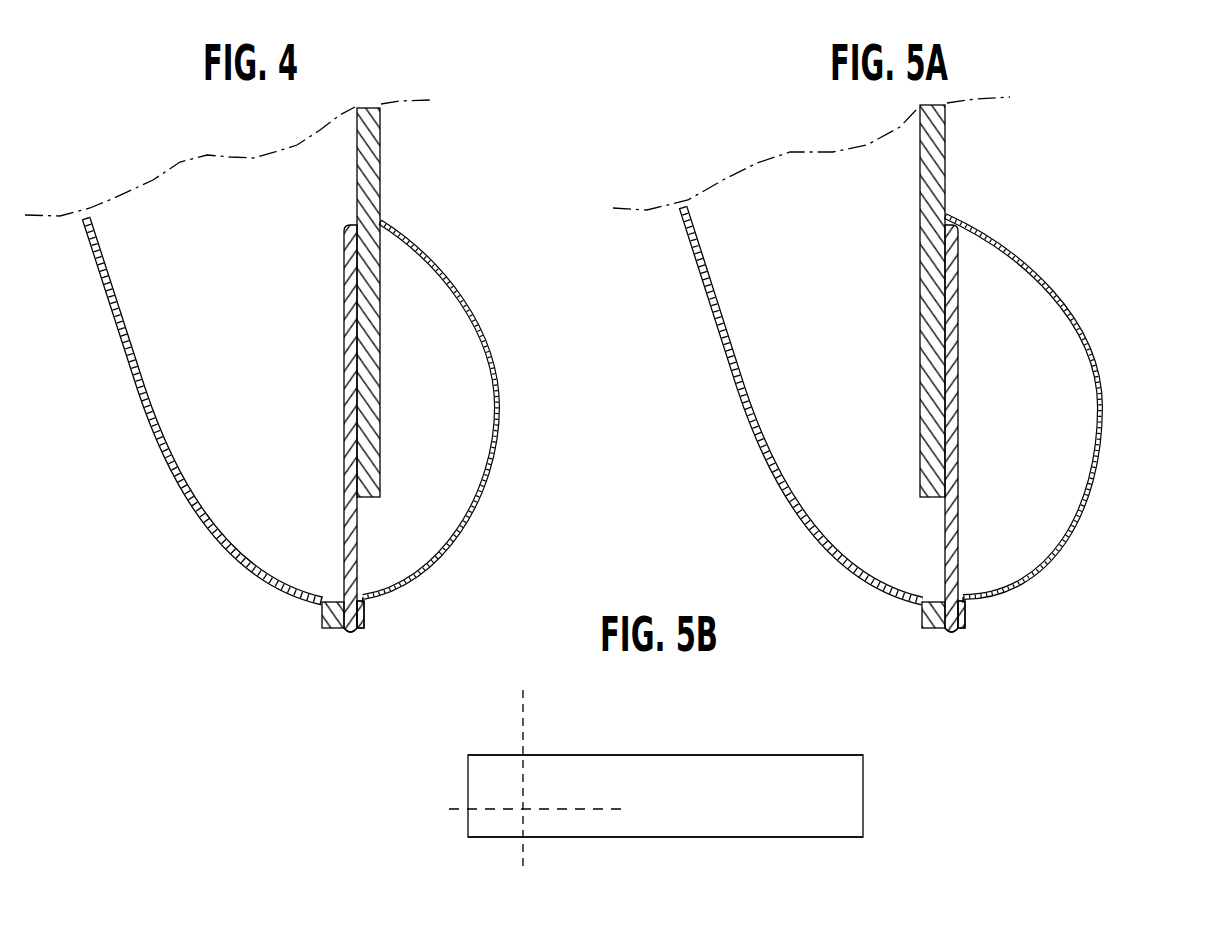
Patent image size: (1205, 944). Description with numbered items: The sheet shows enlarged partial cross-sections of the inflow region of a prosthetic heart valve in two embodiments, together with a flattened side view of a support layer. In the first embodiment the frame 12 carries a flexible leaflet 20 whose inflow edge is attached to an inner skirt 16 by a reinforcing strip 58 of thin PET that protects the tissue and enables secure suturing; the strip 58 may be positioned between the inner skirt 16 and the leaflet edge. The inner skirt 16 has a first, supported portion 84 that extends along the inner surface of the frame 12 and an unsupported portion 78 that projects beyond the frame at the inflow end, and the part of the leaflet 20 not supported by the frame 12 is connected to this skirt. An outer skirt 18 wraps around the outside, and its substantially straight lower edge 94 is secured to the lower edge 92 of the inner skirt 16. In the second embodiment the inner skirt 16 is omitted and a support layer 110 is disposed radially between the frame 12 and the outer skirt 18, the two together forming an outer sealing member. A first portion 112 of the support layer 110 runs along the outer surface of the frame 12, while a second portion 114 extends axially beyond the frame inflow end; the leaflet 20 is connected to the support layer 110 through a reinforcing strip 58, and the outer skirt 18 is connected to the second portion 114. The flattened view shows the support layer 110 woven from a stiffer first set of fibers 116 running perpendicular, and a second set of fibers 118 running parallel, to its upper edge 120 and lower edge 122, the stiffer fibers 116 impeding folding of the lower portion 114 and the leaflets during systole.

In FIG. 4, the frame 12 is at (381, 152).
In FIG. 5A, the frame 12 is at (946, 152).
In FIG. 4, the inner skirt 16 is at (343, 243).
In FIG. 4, the outer skirt 18 is at (478, 303).
In FIG. 5A, the outer skirt 18 is at (1080, 303).
In FIG. 4, the leaflet 20 is at (133, 330).
In FIG. 5A, the leaflet 20 is at (745, 387).
In FIG. 4, the reinforcing strip 58 is at (322, 612).
In FIG. 5A, the reinforcing strip 58 is at (922, 612).
In FIG. 4, the unsupported portion 78 is at (345, 568).
In FIG. 4, the first portion 84 is at (345, 400).
In FIG. 4, the lower edge 92 is at (350, 637).
In FIG. 4, the lower edge 94 is at (362, 632).
In FIG. 5A, the lower edge 94 is at (962, 632).
In FIG. 5A, the support layer 110 is at (958, 320).
In FIG. 5B, the support layer 110 is at (738, 755).
In FIG. 5A, the first portion 112 is at (958, 418).
In FIG. 5A, the second portion 114 is at (958, 538).
In FIG. 5B, the first set of fibers 116 is at (525, 708).
In FIG. 5B, the second set of fibers 118 is at (566, 808).
In FIG. 5B, the upper edge 120 is at (645, 755).
In FIG. 5A, the lower edge 122 is at (950, 637).
In FIG. 5B, the lower edge 122 is at (670, 838).